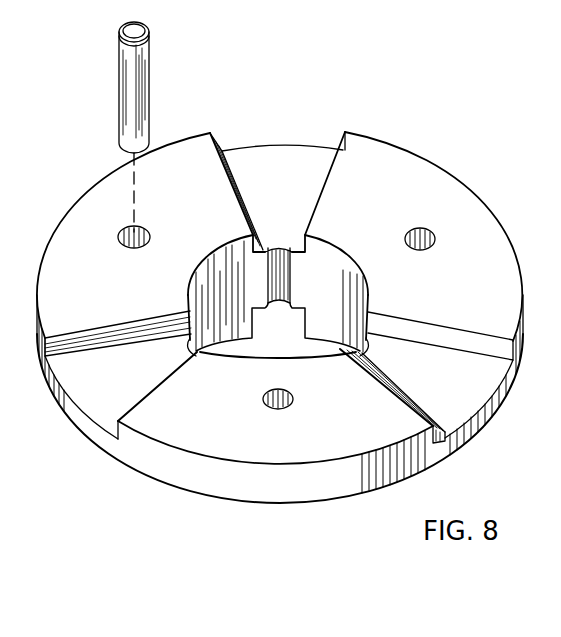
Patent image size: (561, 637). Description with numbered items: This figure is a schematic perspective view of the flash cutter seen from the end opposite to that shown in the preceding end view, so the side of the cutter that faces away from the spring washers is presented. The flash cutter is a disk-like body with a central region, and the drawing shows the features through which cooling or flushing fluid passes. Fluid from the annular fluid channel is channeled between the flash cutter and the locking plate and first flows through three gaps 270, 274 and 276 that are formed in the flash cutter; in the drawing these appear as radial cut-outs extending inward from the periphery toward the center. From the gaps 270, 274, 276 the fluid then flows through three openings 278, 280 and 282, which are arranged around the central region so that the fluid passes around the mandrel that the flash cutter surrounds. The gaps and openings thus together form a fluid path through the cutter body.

The gap 270 is at (107, 415).
The gap 274 is at (473, 394).
The gap 276 is at (284, 162).
The opening 278 is at (193, 352).
The opening 280 is at (370, 358).
The opening 282 is at (293, 250).